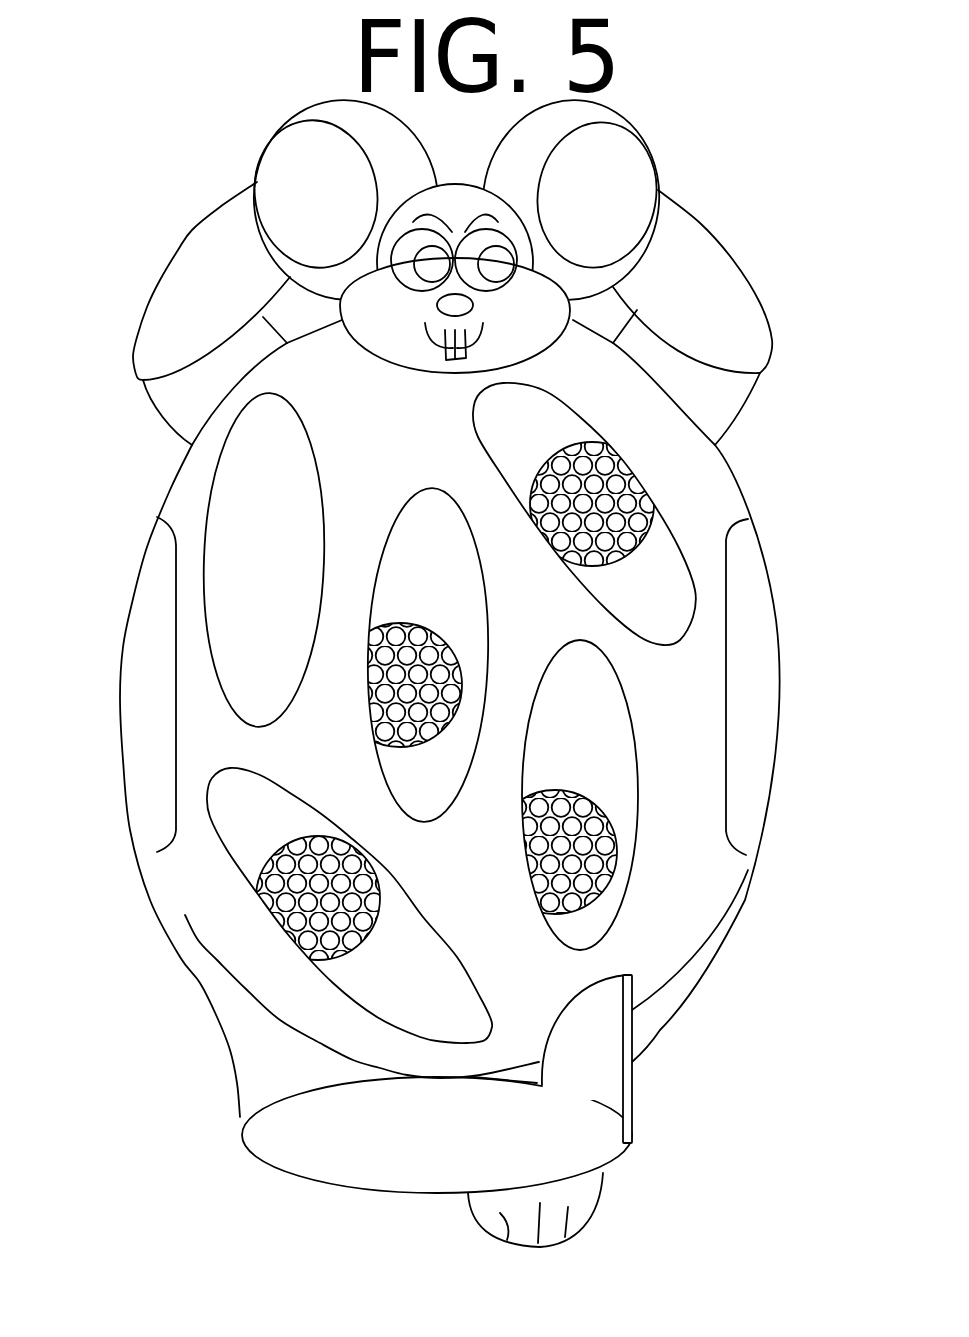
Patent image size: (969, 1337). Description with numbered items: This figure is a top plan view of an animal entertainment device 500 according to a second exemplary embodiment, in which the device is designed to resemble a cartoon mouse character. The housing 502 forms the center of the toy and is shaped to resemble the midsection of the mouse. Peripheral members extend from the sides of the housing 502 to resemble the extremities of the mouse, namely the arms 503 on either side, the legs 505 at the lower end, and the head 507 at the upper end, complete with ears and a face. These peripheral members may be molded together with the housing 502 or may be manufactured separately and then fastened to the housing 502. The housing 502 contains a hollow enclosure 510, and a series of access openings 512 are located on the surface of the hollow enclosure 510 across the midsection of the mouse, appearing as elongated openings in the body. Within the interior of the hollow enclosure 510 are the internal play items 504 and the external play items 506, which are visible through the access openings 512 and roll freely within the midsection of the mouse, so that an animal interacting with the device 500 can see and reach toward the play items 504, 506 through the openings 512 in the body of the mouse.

The animal entertainment device 500 is at (752, 170).
The housing 502 is at (105, 1008).
The arms 503 is at (202, 268).
The internal play items 504 is at (586, 810).
The legs 505 is at (528, 1153).
The external play items 506 is at (385, 697).
The head 507 is at (397, 165).
The hollow enclosure 510 is at (688, 873).
The access openings 512 is at (268, 536).